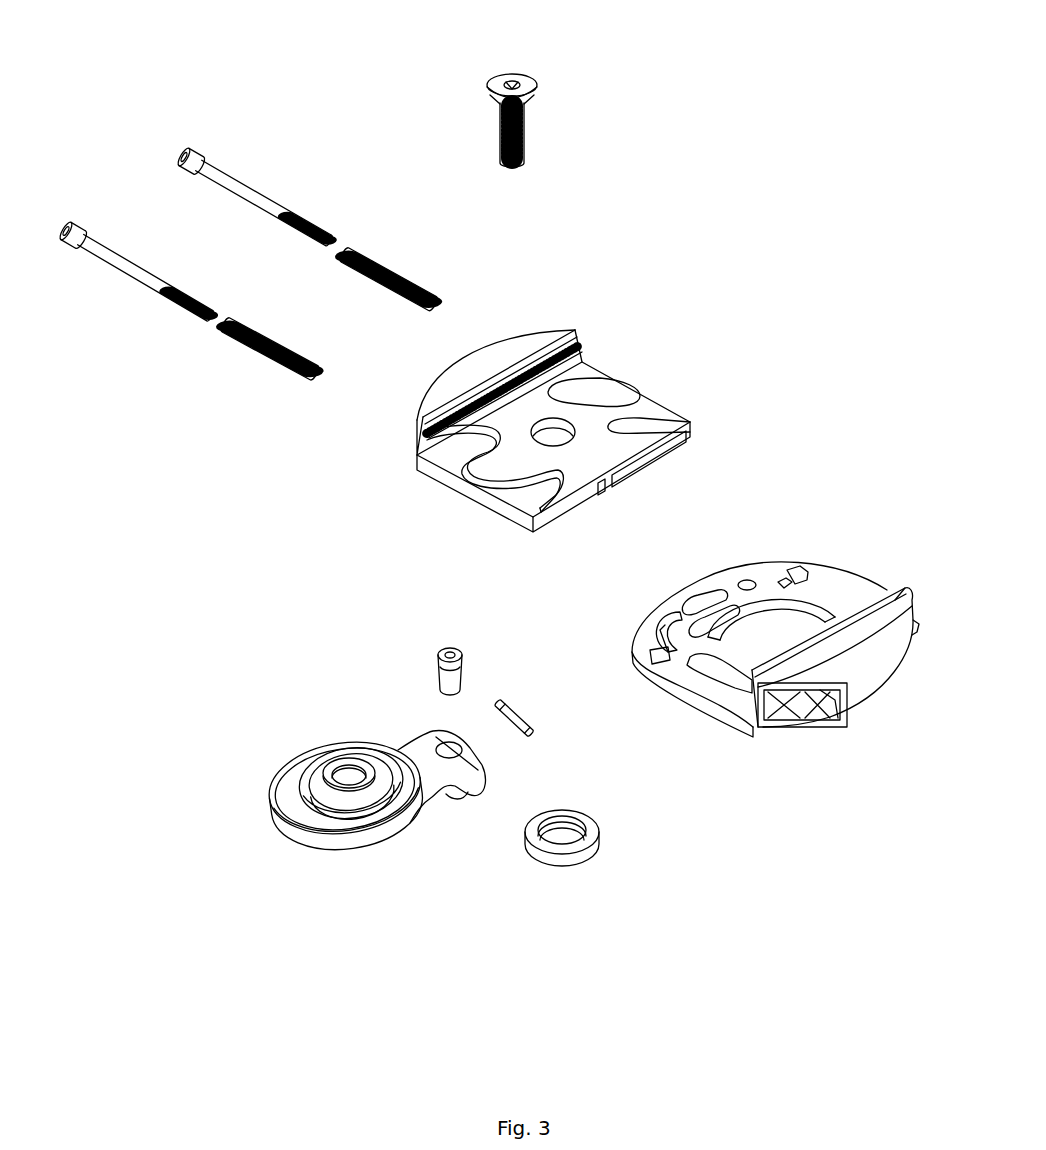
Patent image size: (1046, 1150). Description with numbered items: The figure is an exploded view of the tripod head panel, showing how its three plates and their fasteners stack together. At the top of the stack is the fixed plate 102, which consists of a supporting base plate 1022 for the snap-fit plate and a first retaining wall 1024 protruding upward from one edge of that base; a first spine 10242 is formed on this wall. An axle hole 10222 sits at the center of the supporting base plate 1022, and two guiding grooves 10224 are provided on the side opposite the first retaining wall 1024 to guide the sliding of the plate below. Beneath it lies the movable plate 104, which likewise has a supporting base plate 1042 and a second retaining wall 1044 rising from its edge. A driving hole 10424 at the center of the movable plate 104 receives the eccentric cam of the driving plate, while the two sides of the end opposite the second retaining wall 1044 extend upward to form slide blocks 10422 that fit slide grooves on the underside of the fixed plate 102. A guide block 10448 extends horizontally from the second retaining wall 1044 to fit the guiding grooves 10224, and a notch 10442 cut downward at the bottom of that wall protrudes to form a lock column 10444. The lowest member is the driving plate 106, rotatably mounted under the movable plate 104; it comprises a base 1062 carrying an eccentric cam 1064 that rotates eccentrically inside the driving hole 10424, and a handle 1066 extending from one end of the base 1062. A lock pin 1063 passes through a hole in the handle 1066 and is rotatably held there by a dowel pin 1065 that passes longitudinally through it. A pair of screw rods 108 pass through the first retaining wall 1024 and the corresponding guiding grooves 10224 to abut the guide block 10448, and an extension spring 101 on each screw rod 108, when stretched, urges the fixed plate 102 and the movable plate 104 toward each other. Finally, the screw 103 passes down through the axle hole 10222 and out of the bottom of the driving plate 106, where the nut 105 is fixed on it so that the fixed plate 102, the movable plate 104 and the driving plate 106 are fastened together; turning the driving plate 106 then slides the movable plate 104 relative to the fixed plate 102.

The extension spring 101 is at (382, 275).
The fixed plate 102 is at (541, 389).
The supporting base plate 1022 is at (620, 403).
The axle hole 10222 is at (560, 432).
The guiding grooves 10224 is at (690, 432).
The first retaining wall 1024 is at (480, 358).
The first spine 10242 is at (430, 428).
The screw 103 is at (527, 82).
The movable plate 104 is at (709, 643).
The supporting base plate 1042 is at (693, 626).
The slide blocks 10422 is at (660, 650).
The driving hole 10424 is at (750, 630).
The second retaining wall 1044 is at (880, 610).
The notch 10442 is at (818, 700).
The lock column 10444 is at (800, 732).
The guide block 10448 is at (742, 688).
The nut 105 is at (562, 857).
The driving plate 106 is at (322, 767).
The base 1062 is at (280, 782).
The lock pin 1063 is at (447, 650).
The eccentric cam 1064 is at (377, 787).
The dowel pin 1065 is at (532, 730).
The handle 1066 is at (433, 737).
The screw rods 108 is at (228, 185).